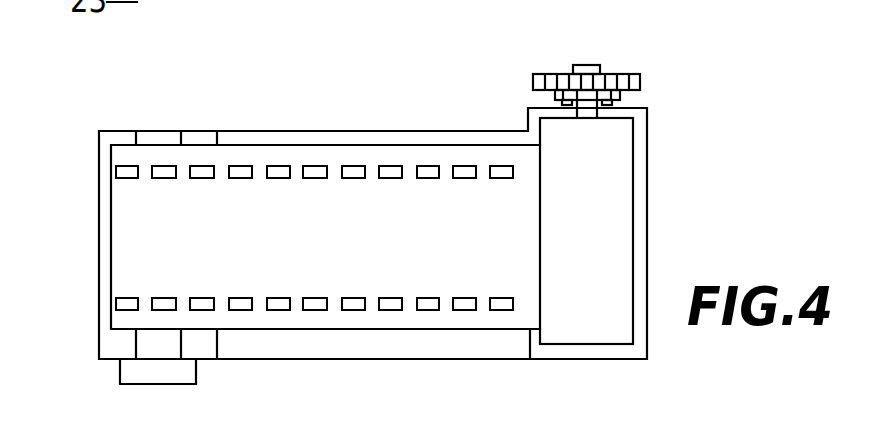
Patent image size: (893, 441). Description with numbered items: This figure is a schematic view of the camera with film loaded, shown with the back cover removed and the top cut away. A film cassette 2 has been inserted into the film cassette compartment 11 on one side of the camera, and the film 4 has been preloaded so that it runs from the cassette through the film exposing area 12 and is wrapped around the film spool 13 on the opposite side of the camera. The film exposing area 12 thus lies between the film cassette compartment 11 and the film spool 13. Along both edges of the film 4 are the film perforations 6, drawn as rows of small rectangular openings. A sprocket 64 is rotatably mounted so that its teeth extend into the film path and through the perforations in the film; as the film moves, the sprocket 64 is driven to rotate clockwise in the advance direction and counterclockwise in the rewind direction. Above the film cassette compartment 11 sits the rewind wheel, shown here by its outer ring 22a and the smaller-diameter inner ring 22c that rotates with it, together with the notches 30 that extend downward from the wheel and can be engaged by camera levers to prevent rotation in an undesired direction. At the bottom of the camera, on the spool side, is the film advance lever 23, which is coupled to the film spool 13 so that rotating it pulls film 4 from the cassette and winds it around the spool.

The film cassette 2 is at (623, 247).
The film 4 is at (282, 252).
The film perforations 6 is at (385, 298).
The film cassette compartment 11 is at (612, 208).
The film exposing area 12 is at (358, 219).
The film spool 13 is at (152, 139).
The outer ring 22a is at (548, 74).
The inner ring 22c is at (620, 95).
The film advance lever 23 is at (155, 373).
The notches 30 is at (560, 102).
The sprocket 64 is at (425, 166).